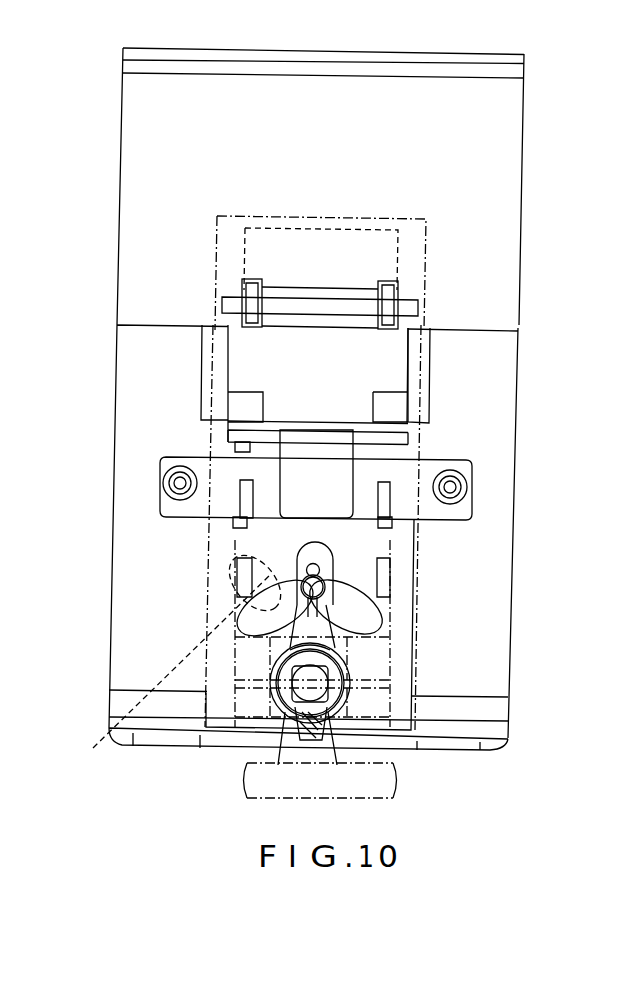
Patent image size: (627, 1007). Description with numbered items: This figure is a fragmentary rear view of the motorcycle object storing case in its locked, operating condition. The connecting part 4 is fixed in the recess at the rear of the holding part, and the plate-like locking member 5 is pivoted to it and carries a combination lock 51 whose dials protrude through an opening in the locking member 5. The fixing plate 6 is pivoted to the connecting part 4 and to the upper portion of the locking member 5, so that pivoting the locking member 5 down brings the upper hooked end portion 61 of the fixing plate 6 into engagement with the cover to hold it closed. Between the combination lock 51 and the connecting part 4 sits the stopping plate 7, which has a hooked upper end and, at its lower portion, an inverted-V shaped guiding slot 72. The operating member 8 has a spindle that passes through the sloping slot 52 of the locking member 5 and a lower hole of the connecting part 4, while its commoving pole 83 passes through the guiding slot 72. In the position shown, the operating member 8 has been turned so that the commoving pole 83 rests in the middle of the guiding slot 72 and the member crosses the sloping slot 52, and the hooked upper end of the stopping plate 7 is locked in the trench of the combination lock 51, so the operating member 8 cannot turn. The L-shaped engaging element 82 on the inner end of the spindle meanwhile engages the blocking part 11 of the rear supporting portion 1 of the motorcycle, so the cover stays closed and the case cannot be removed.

The rear supporting portion 1 is at (395, 778).
The connecting part 4 is at (420, 543).
The locking member 5 is at (498, 420).
The combination lock 51 is at (408, 460).
The sloping slot 52 is at (175, 656).
The fixing plate 6 is at (500, 262).
The upper hooked end portion 61 is at (510, 72).
The stopping plate 7 is at (290, 523).
The inverted-V shaped guiding slot 72 is at (352, 613).
The operating member 8 is at (345, 683).
The L-shaped engaging element 82 is at (302, 735).
The commoving pole 83 is at (307, 578).
The blocking part 11 is at (330, 727).